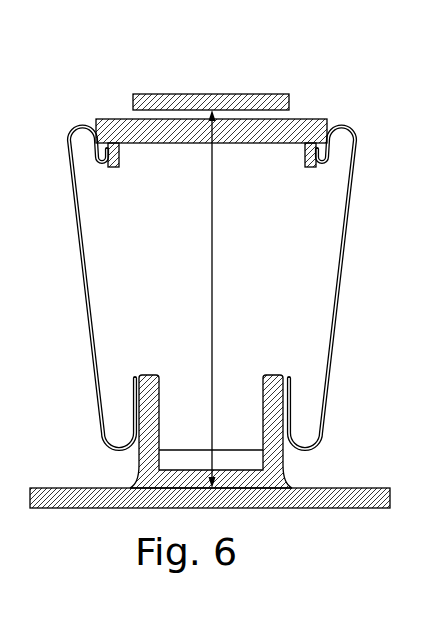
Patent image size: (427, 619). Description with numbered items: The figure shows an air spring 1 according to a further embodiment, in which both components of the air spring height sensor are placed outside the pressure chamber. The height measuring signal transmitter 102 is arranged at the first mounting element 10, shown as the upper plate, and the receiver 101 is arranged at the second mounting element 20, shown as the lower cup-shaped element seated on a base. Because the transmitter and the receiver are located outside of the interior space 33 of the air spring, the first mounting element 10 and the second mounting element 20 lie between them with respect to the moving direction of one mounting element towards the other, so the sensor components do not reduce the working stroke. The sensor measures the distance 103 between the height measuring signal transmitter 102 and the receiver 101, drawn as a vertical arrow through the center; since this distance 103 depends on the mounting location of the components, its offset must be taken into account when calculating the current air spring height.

The air spring 1 is at (188, 289).
The interior space 33 is at (133, 285).
The first mounting element 10 is at (122, 125).
The height measuring signal transmitter 102 is at (267, 102).
The distance between height measuring signal transmitter and receiver 103 is at (212, 223).
The second mounting element 20 is at (145, 463).
The receiver 101 is at (320, 501).